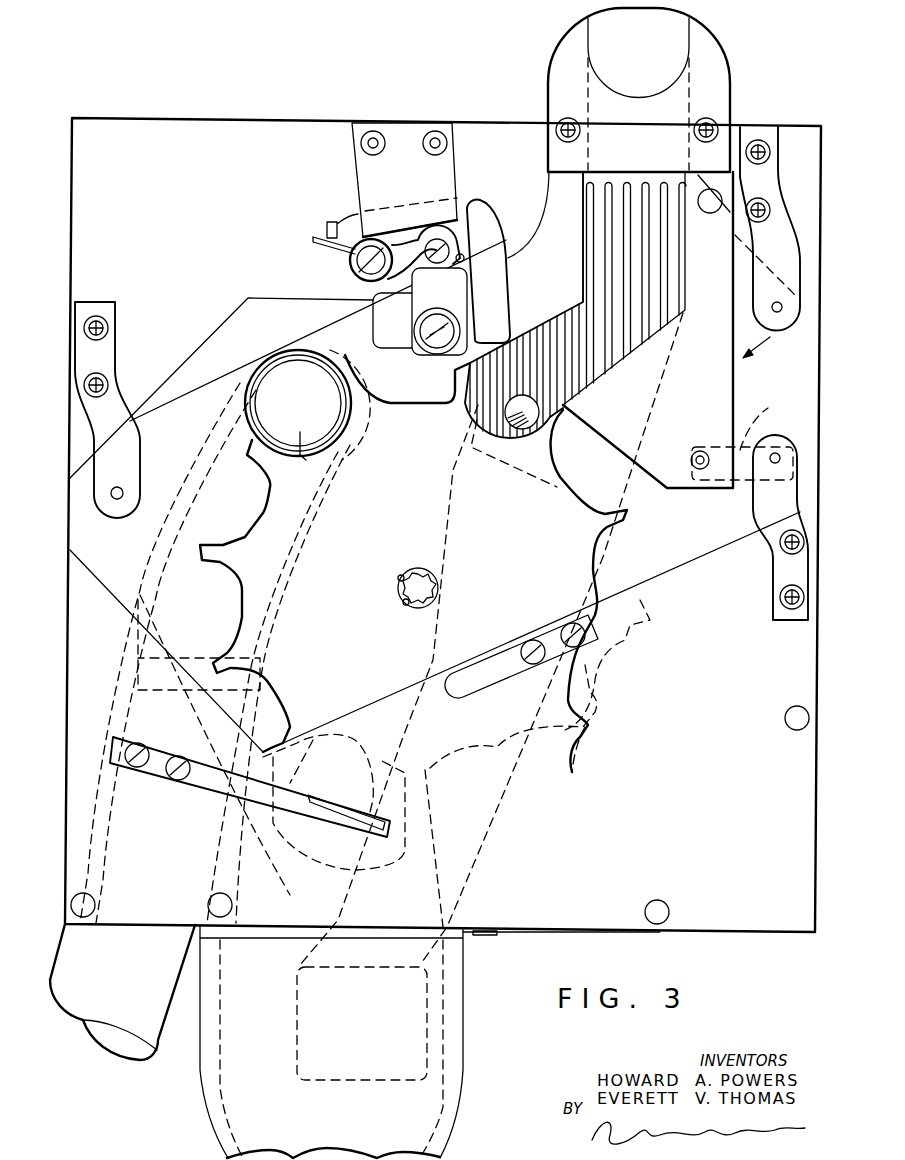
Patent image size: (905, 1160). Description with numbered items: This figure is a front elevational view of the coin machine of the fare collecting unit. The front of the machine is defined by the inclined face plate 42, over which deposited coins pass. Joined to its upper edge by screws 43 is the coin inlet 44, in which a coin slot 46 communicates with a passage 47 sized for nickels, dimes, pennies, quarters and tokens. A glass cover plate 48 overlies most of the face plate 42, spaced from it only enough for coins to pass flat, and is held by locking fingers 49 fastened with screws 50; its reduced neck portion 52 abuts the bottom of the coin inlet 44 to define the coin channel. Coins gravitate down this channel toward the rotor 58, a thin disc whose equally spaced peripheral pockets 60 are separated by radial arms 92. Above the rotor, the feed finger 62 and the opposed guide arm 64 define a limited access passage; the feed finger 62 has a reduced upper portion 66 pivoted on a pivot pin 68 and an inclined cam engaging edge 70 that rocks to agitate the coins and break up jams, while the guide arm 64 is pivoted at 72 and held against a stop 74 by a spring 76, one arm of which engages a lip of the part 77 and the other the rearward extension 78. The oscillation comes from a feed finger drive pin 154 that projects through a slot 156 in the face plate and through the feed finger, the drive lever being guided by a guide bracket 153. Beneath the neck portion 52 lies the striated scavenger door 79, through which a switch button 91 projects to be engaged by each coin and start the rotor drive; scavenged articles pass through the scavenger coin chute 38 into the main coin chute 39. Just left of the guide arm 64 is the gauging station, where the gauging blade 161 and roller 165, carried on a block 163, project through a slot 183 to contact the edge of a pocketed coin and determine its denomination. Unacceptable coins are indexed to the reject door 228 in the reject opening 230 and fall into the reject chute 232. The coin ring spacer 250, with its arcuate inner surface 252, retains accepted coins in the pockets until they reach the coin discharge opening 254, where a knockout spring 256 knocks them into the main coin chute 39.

The scavenger coin chute 38 is at (470, 870).
The main coin chute 39 is at (465, 1008).
The face plate 42 is at (322, 135).
The screws 43 is at (565, 124).
The coin inlet 44 is at (550, 58).
The coin slot 46 is at (582, 30).
The passage 47 is at (690, 90).
The cover plate 48 is at (343, 337).
The locking fingers 49 is at (108, 347).
The screws 50 is at (98, 318).
The reduced neck portion 52 is at (543, 202).
The rotor 58 is at (567, 560).
The peripheral pockets 60 is at (407, 413).
The feed finger 62 is at (770, 344).
The guide arm 64 is at (490, 295).
The reduced upper portion 66 is at (733, 247).
The pivot pin 68 is at (712, 212).
The inclined cam engaging edge 70 is at (610, 358).
The pivot of coin guide 72 is at (350, 266).
The stop 74 is at (438, 240).
The spring 76 is at (357, 222).
The part with lip 77 is at (450, 168).
The rearward extension 78 is at (327, 232).
The scavenger door 79 is at (588, 255).
The switch button 91 is at (518, 428).
The radial arms 92 is at (252, 453).
The guide bracket 153 is at (710, 480).
The feed finger drive pin 154 is at (697, 453).
The slot 156 is at (762, 425).
The gauging blade 161 is at (407, 355).
The block 163 is at (385, 328).
The roller 165 is at (470, 333).
The slot 183 is at (461, 253).
The reject door 228 is at (297, 462).
The reject opening 230 is at (273, 352).
The reject chute 232 is at (290, 543).
The coin ring spacer 250 is at (185, 357).
The arcuate inner surface 252 is at (170, 473).
The coin discharge opening 254 is at (407, 807).
The knockout spring 256 is at (300, 797).